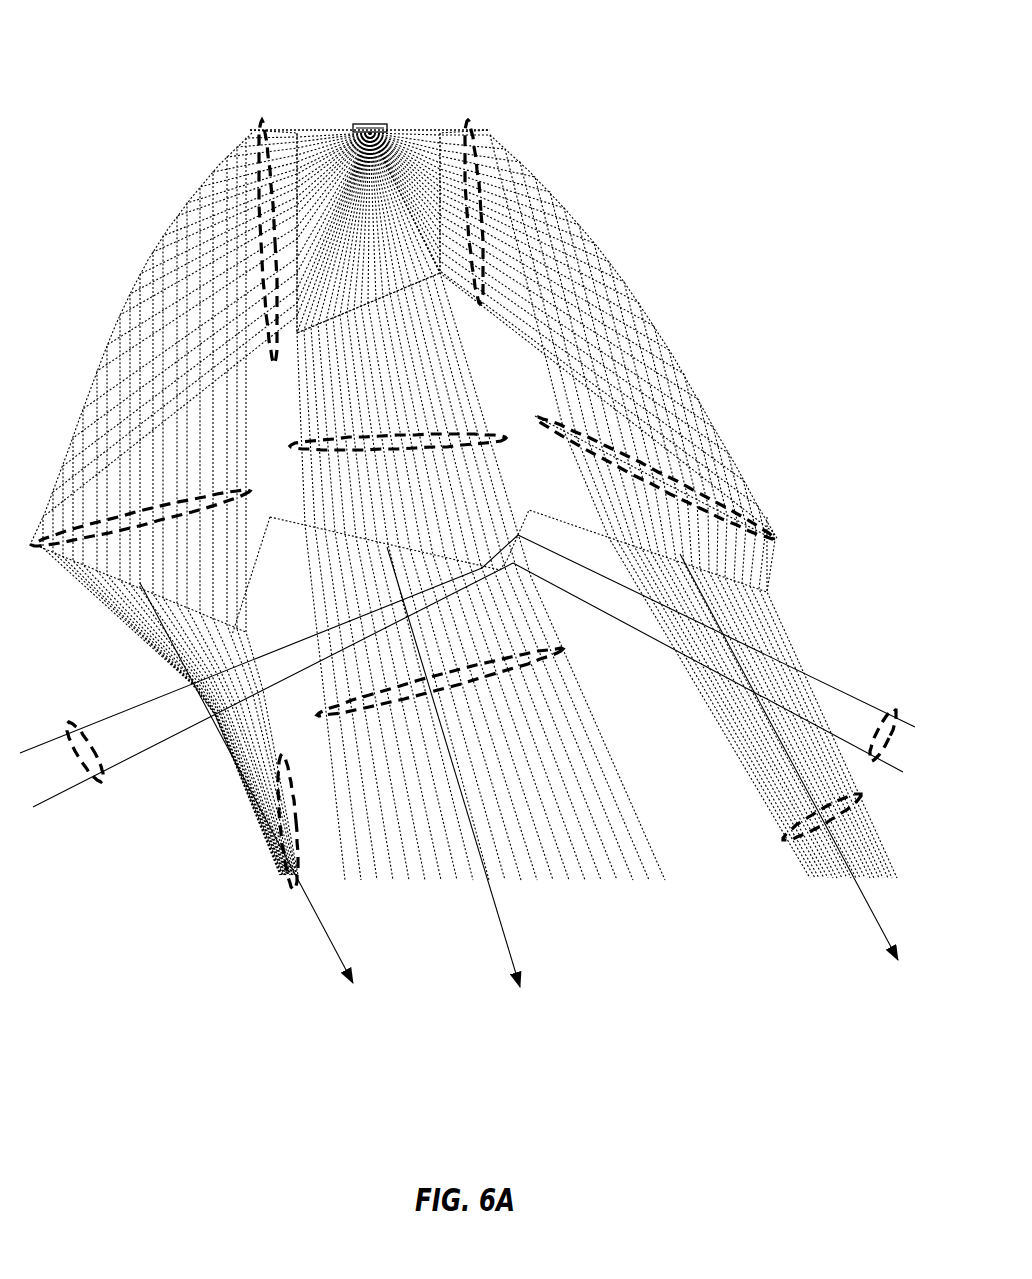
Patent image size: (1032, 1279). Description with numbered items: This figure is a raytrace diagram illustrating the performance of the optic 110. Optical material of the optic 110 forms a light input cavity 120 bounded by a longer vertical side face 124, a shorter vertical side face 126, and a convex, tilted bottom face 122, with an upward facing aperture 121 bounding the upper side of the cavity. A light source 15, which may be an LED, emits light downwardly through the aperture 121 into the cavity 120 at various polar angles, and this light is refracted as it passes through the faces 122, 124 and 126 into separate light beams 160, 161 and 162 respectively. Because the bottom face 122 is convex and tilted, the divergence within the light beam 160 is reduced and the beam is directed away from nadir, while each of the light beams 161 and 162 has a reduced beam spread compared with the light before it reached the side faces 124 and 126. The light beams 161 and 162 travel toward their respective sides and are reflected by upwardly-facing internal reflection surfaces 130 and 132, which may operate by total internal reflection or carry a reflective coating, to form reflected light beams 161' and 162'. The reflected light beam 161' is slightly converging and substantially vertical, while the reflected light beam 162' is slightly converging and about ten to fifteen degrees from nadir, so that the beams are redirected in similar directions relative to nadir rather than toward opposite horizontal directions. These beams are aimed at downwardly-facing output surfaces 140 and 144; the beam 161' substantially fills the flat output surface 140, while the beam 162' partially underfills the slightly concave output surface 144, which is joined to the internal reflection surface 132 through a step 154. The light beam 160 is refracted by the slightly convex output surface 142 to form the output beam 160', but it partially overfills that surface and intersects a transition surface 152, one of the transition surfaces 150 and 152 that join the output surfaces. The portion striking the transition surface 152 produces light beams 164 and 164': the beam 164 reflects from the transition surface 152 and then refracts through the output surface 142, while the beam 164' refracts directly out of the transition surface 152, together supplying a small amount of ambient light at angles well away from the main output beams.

The optic 110 is at (622, 58).
The light source 15 is at (367, 124).
The light input cavity 120 is at (337, 133).
The aperture 121 is at (413, 127).
The bottom face 122 is at (374, 283).
The side face 124 is at (302, 190).
The side face 126 is at (435, 210).
The internal reflection surface 130 is at (180, 215).
The internal reflection surface 132 is at (586, 217).
The output surface 140 is at (100, 582).
The output surface 142 is at (345, 546).
The output surface 144 is at (701, 572).
The transition surface 150 is at (262, 592).
The transition surface 152 is at (528, 522).
The step 154 is at (777, 566).
The light beam 160 is at (409, 413).
The output beam 160' is at (473, 682).
The light beam 161 is at (253, 206).
The reflected light beam 161' is at (158, 473).
The light beam 162 is at (488, 176).
The reflected light beam 162' is at (693, 478).
The light beam 164 is at (108, 788).
The light beam 164' is at (902, 697).